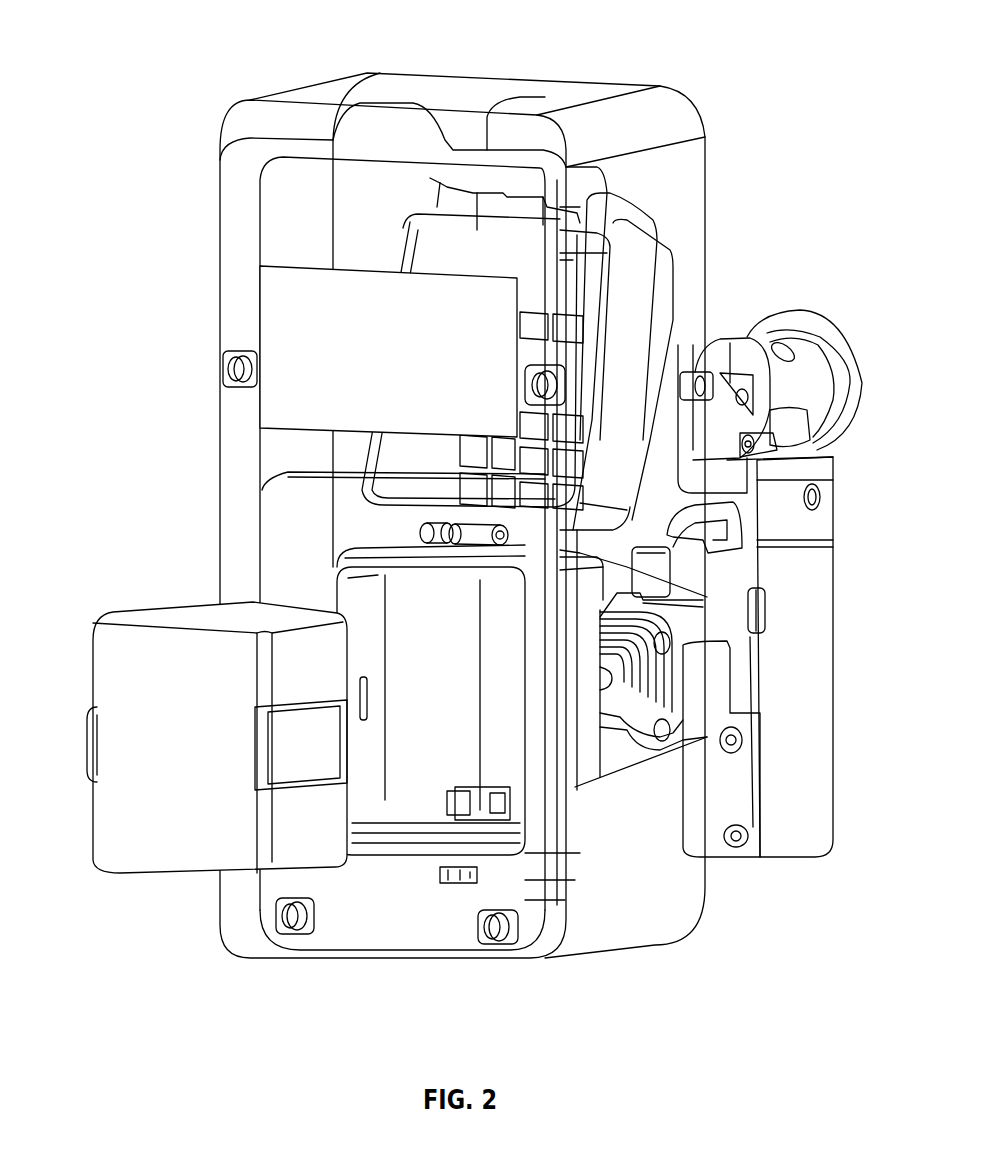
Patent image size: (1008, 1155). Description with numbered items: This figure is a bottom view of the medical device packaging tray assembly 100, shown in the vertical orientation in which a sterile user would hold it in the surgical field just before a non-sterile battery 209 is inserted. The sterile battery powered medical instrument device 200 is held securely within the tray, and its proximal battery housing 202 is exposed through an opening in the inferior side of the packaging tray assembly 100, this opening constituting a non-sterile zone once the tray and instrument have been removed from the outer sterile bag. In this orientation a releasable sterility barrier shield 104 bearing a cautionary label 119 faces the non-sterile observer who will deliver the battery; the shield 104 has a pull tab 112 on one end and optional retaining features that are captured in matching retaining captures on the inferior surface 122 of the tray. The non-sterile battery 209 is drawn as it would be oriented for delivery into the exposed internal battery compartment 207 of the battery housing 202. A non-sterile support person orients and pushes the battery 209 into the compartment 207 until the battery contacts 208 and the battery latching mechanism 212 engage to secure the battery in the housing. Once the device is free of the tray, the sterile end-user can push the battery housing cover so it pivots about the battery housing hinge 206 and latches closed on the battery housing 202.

The medical device packaging tray assembly 100 is at (728, 85).
The releasable sterility barrier shield 104 is at (283, 222).
The pull tab 112 is at (393, 133).
The inferior surface 122 is at (485, 138).
The cautionary label 119 is at (287, 297).
The battery housing 202 is at (383, 553).
The battery latching mechanism 212 is at (370, 690).
The non-sterile battery 209 is at (137, 788).
The sterile battery powered medical instrument device 200 is at (843, 530).
The battery housing hinge 206 is at (767, 612).
The internal battery compartment 207 is at (430, 777).
The battery contacts 208 is at (447, 807).